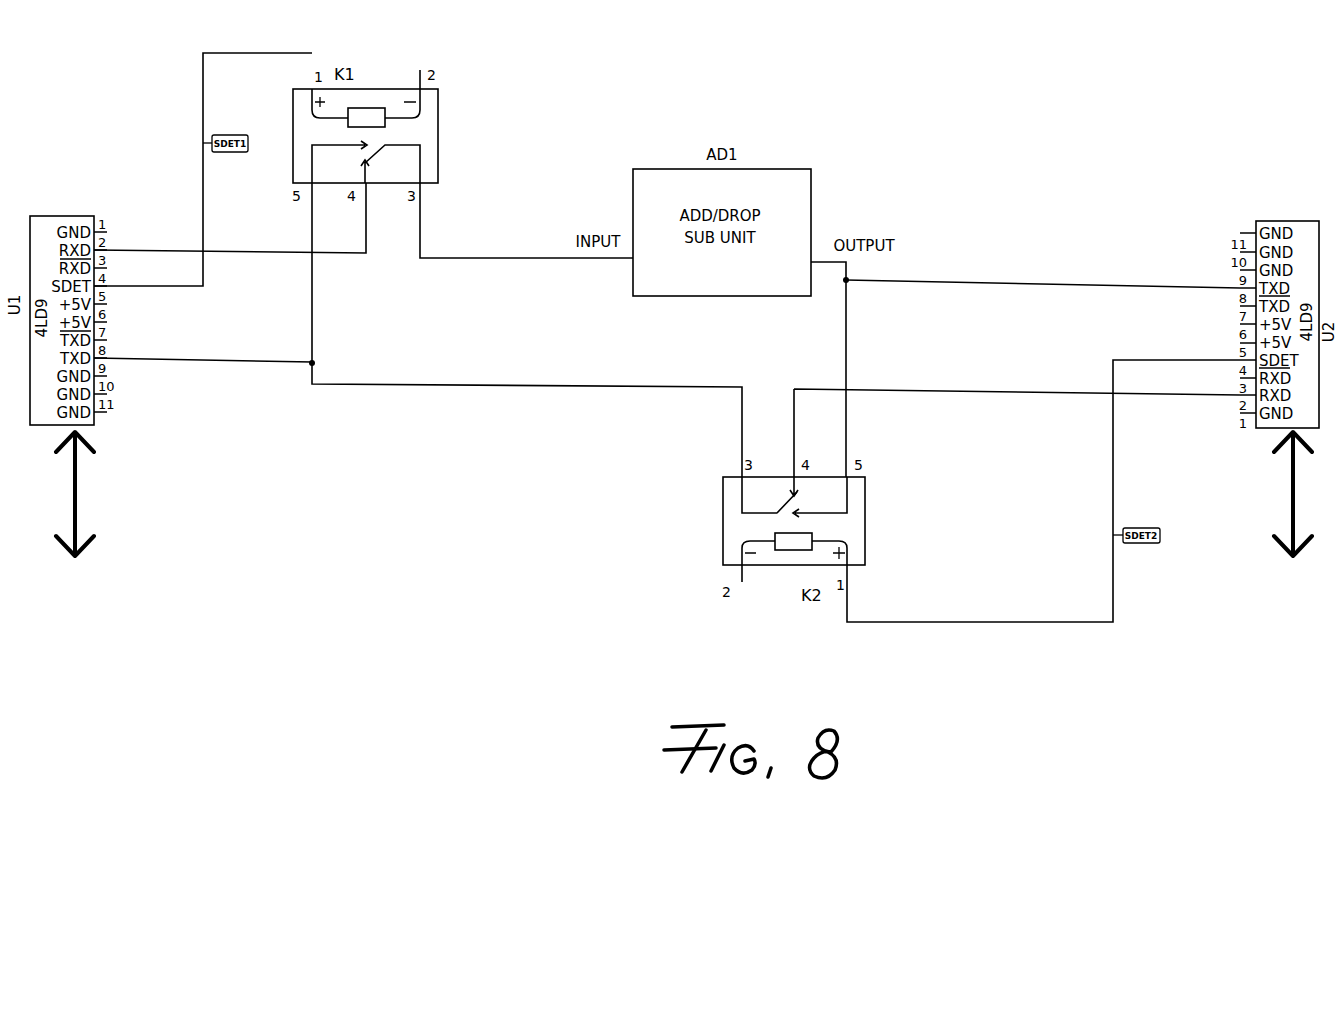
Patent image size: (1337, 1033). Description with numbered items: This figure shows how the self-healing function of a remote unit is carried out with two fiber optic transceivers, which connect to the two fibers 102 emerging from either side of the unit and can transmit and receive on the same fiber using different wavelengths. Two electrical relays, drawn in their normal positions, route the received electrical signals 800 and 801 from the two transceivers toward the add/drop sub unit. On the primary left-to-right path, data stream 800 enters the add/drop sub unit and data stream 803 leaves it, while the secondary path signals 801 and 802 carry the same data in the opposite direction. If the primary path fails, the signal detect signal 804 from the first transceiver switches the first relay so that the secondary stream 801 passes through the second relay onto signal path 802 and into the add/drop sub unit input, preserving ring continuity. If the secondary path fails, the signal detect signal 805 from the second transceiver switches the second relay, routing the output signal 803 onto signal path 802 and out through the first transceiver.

The received electrical signal 800 is at (230, 218).
The received electrical signal 801 is at (1017, 421).
The signal path 802 is at (418, 330).
The output signal 803 is at (1043, 271).
The signal detect signal 804 is at (203, 154).
The signal detect signal 805 is at (1043, 491).
The fibers 102 is at (684, 513).